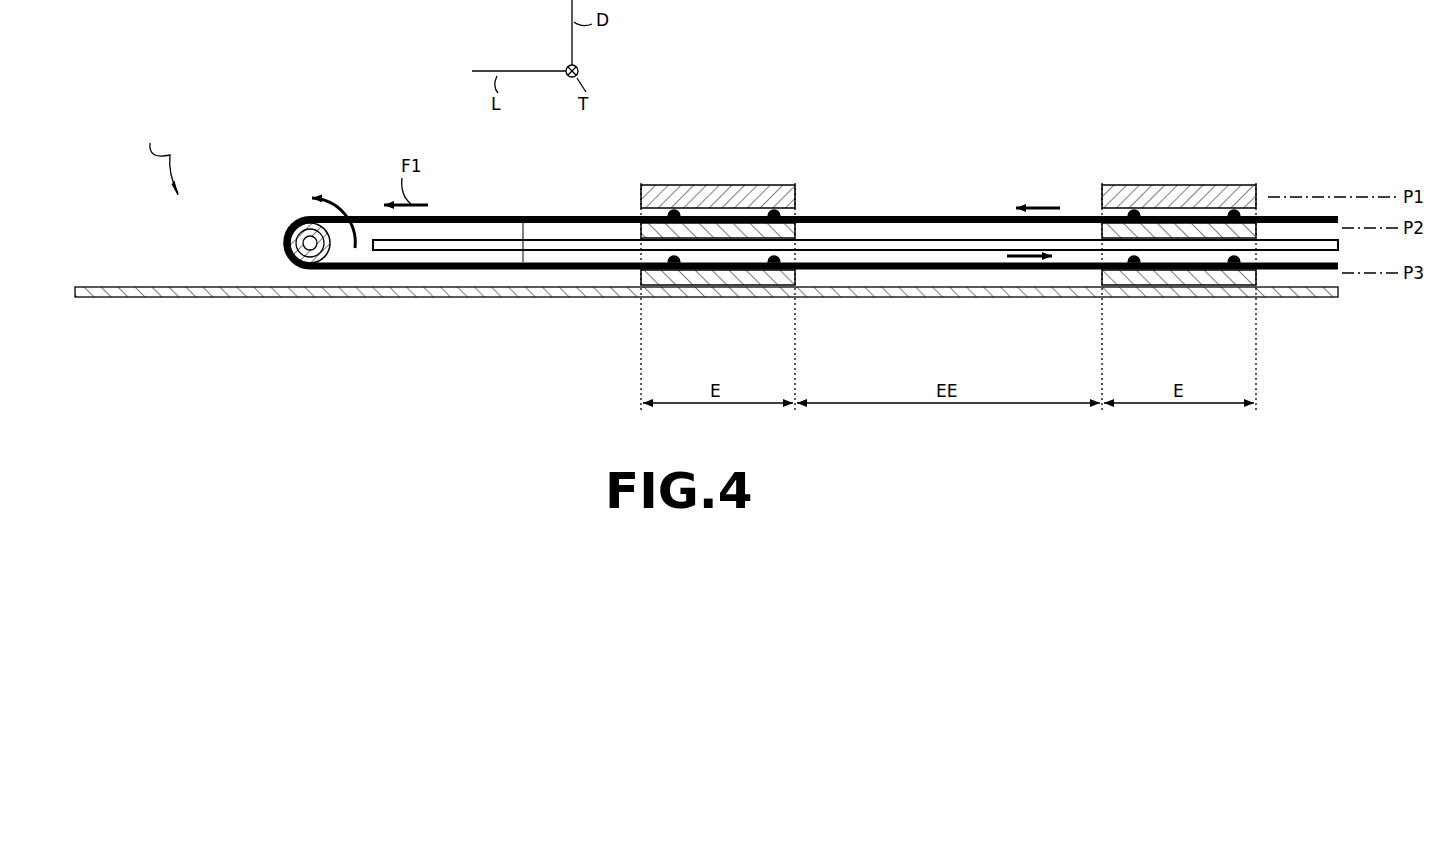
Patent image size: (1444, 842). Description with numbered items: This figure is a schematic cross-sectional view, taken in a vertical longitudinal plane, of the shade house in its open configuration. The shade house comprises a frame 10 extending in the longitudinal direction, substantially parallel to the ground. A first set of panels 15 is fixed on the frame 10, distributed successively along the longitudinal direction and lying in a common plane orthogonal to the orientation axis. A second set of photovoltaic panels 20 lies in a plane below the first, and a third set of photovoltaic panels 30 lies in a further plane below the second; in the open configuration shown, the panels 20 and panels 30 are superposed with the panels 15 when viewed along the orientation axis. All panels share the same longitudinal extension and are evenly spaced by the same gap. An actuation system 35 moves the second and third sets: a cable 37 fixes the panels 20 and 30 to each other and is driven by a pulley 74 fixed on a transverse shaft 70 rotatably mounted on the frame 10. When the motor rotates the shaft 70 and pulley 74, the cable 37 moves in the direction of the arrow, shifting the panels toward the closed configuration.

The frame 10 is at (252, 291).
The panels of the first set 15 is at (720, 196).
The photovoltaic panels of the second set 20 is at (798, 205).
The photovoltaic panels of the third set 30 is at (740, 280).
The actuation system 35 is at (157, 158).
The cable 37 is at (565, 215).
The transverse shaft 70 is at (325, 262).
The pulley 74 is at (315, 250).